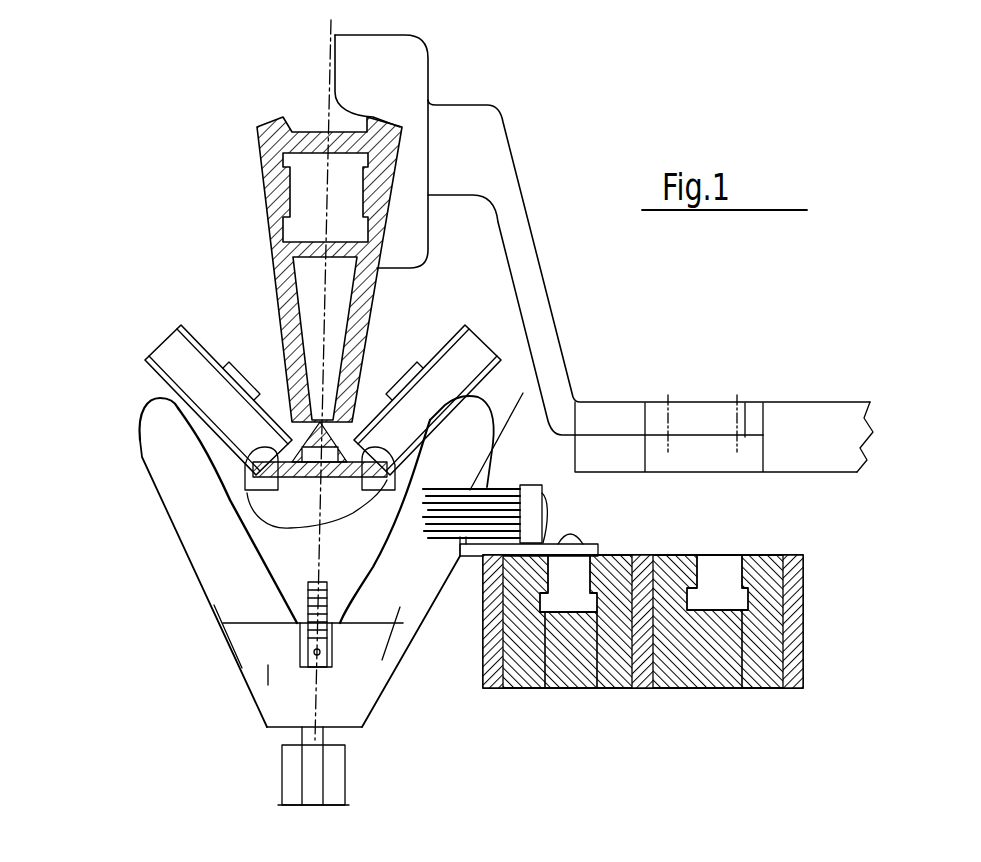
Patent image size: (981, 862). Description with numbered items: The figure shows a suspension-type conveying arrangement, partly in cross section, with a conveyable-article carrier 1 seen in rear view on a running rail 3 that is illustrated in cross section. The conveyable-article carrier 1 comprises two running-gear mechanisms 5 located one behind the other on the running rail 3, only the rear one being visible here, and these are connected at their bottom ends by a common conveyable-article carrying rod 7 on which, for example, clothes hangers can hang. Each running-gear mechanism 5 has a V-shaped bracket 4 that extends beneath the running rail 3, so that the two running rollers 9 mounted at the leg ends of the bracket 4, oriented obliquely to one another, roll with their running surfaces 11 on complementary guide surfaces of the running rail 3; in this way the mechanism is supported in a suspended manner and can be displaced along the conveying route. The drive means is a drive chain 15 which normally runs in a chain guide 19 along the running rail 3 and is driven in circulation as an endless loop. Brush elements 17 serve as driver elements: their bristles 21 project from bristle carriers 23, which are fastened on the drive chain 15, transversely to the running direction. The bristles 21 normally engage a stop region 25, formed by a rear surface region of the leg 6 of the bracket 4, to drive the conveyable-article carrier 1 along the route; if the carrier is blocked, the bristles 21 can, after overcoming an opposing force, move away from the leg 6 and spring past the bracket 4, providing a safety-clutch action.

The conveyable-article carrier 1 is at (118, 477).
The running rail 3 is at (313, 413).
The V-shaped bracket 4 is at (253, 672).
The running-gear mechanism 5 is at (207, 547).
The leg 6 is at (412, 557).
The conveyable-article carrying rod 7 is at (323, 783).
The running roller 9 is at (187, 368).
The running surface 11 is at (167, 350).
The drive chain 15 is at (573, 572).
The brush element 17 is at (537, 493).
The chain guide 19 is at (545, 600).
The bristles 21 is at (477, 488).
The bristle carrier 23 is at (543, 493).
The stop region 25 is at (508, 422).